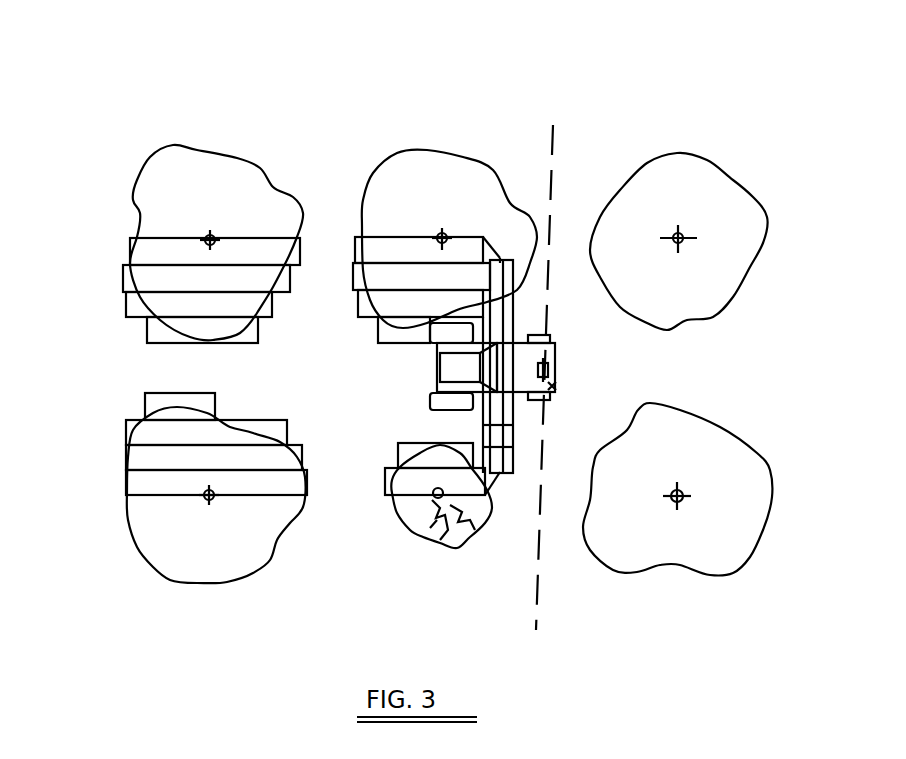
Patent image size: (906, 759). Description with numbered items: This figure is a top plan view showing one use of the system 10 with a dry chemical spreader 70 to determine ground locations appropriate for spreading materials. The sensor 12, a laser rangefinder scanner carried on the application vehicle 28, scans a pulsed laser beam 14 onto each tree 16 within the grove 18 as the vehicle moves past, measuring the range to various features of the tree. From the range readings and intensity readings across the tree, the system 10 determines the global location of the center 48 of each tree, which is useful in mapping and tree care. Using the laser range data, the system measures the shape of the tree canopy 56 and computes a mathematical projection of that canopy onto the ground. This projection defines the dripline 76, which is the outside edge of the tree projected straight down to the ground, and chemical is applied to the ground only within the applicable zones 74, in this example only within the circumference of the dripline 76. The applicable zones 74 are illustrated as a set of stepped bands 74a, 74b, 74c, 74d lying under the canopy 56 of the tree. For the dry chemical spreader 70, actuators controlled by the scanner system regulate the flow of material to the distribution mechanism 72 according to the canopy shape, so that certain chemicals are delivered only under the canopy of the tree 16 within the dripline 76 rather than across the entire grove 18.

The system 10 is at (509, 386).
The sensor 12 is at (570, 363).
The pulsed laser beam 14 is at (562, 180).
The tree 16 is at (216, 495).
The grove 18 is at (287, 580).
The application vehicle 28 is at (427, 377).
The center of a tree 48 is at (679, 241).
The tree canopy 56 is at (276, 385).
The dry chemical spreader 70 is at (508, 483).
The distribution mechanism 72 is at (497, 427).
The applicable zones 74 is at (170, 408).
The first layer 74a is at (215, 252).
The second layer 74b is at (206, 279).
The third layer 74c is at (199, 305).
The fourth layer 74d is at (202, 330).
The dripline 76 is at (183, 414).